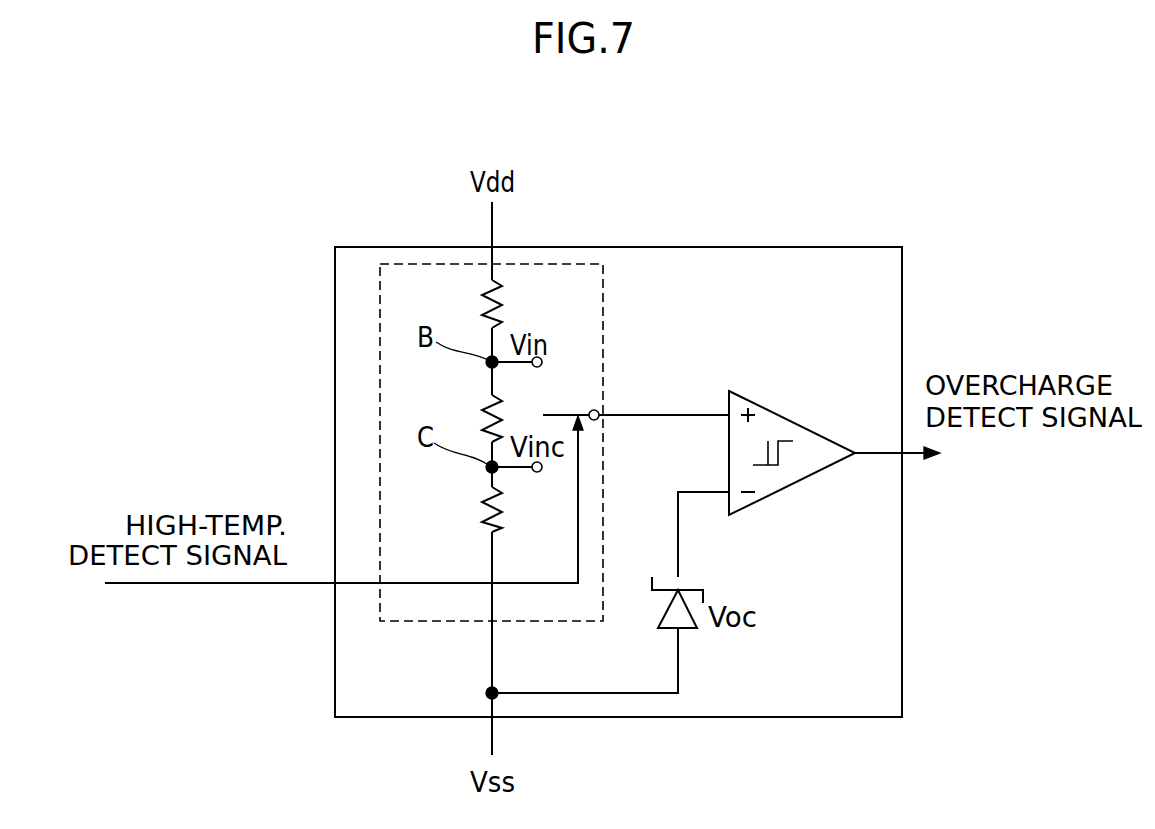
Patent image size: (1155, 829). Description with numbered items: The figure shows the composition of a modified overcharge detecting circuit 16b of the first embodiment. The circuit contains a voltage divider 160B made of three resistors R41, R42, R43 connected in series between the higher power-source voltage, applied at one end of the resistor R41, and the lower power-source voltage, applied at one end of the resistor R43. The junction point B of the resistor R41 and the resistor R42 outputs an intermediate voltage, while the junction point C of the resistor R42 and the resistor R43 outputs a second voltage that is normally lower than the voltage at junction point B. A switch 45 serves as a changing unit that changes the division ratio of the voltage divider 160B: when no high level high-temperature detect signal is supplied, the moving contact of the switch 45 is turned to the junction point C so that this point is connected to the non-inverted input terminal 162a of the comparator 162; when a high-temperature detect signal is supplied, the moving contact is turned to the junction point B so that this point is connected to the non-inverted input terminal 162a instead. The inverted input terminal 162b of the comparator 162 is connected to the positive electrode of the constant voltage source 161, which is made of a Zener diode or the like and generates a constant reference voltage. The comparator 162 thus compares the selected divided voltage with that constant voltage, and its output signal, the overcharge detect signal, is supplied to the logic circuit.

The overcharge detecting circuit 16b is at (784, 246).
The voltage divider 160B is at (542, 262).
The resistor R41 is at (466, 304).
The resistor R42 is at (466, 414).
The resistor R43 is at (466, 509).
The switch 45 is at (565, 415).
The comparator 162 is at (790, 420).
The non-inverted input terminal 162a is at (729, 408).
The inverted input terminal 162b is at (729, 485).
The constant voltage source 161 is at (690, 588).